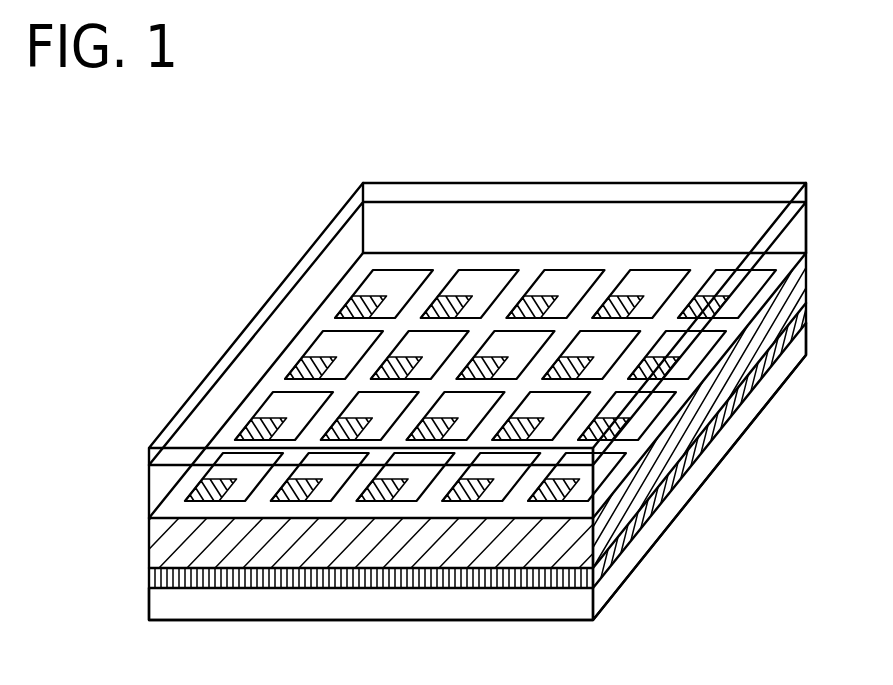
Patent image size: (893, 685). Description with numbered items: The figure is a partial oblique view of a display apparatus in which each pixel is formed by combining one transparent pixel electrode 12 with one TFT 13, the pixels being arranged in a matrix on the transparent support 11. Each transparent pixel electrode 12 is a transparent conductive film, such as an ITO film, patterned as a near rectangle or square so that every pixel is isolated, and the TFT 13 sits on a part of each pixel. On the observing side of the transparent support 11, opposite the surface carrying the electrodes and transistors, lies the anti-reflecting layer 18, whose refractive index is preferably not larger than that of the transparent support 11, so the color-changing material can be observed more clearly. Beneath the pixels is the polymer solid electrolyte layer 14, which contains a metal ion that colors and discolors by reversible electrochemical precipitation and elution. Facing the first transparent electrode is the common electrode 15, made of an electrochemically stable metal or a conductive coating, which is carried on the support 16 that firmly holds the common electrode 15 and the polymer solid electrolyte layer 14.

The transparent support 11 is at (180, 446).
The transparent pixel electrode 12 is at (322, 342).
The TFT 13 is at (250, 423).
The polymer solid electrolyte layer 14 is at (800, 283).
The common electrode 15 is at (733, 413).
The support 16 is at (658, 523).
The anti-reflecting layer 18 is at (805, 207).